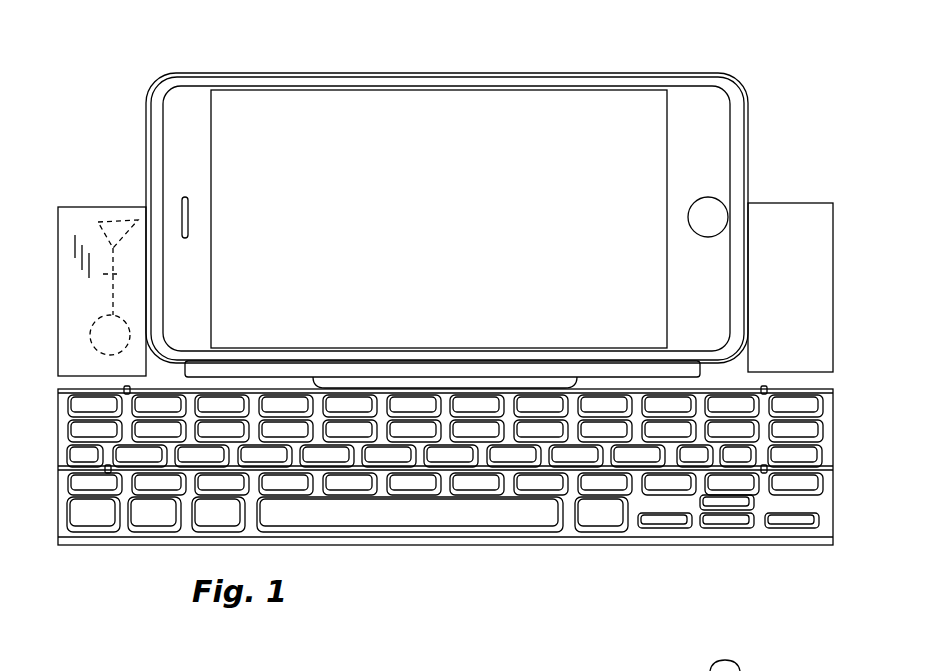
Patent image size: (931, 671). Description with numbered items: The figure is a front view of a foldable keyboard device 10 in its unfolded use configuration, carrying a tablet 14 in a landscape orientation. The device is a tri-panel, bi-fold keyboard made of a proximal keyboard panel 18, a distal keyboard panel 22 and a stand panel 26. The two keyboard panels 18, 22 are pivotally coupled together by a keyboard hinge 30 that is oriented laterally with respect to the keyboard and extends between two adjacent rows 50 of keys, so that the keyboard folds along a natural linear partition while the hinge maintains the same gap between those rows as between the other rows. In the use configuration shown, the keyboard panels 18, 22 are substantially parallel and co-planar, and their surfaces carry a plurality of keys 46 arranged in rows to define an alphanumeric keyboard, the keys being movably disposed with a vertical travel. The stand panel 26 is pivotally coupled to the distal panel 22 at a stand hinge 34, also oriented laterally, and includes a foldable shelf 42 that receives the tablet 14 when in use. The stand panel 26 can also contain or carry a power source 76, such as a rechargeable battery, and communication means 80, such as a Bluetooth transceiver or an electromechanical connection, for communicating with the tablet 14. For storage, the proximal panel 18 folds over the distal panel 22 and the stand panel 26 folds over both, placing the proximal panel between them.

The foldable keyboard device 10 is at (373, 556).
The tablet 14 is at (326, 71).
The proximal keyboard panel 18 is at (652, 537).
The distal keyboard panel 22 is at (828, 411).
The stand panel 26 is at (790, 204).
The keyboard hinge 30 is at (764, 474).
The stand hinge 34 is at (764, 386).
The foldable shelf 42 is at (597, 360).
The keys 46 is at (165, 519).
The adjacent rows of keys 50 is at (66, 454).
The power source 76 is at (111, 205).
The communication means 80 is at (92, 343).